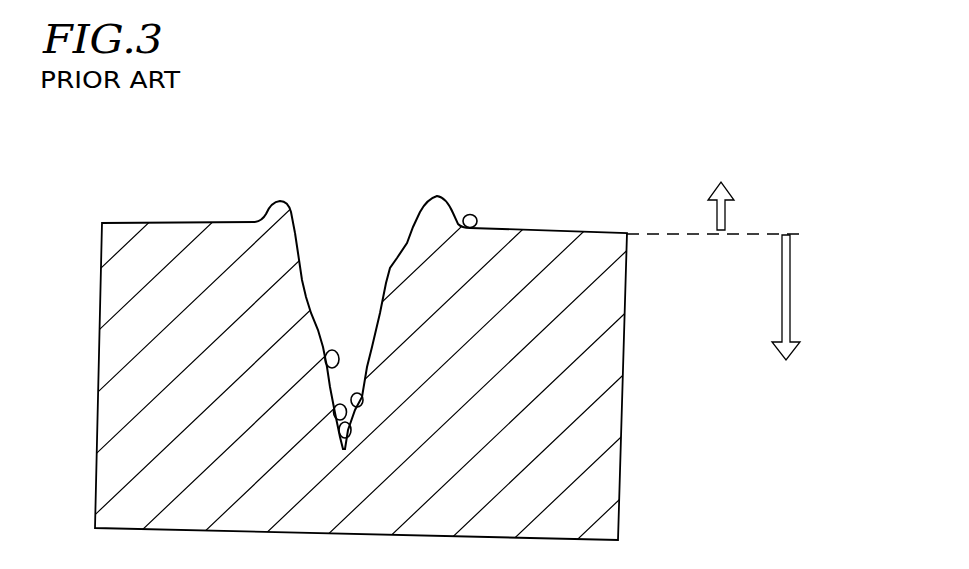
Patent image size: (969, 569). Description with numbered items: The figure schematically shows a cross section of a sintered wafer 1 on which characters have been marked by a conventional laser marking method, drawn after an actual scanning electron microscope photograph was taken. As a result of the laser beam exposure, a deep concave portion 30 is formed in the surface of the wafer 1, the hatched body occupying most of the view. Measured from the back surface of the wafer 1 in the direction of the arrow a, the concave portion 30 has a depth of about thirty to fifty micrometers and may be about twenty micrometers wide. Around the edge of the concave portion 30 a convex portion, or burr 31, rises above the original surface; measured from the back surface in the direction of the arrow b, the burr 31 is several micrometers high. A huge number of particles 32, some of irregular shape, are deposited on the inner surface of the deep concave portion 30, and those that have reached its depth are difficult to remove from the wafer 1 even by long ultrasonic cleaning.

The sintered wafer 1 is at (110, 306).
The concave portion 30 is at (395, 268).
The convex portion (burr) 31 is at (270, 206).
The particles 32 is at (338, 350).
The arrow a is at (790, 293).
The arrow b is at (715, 212).